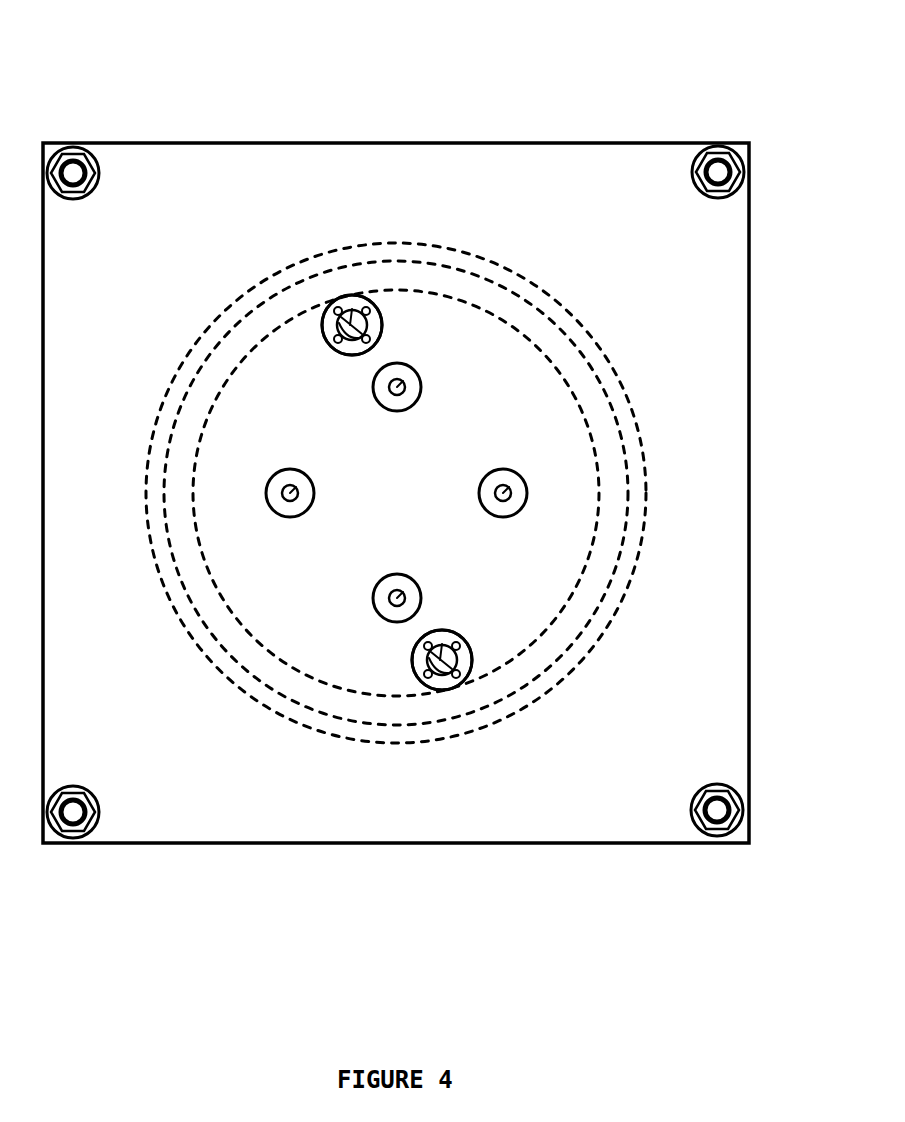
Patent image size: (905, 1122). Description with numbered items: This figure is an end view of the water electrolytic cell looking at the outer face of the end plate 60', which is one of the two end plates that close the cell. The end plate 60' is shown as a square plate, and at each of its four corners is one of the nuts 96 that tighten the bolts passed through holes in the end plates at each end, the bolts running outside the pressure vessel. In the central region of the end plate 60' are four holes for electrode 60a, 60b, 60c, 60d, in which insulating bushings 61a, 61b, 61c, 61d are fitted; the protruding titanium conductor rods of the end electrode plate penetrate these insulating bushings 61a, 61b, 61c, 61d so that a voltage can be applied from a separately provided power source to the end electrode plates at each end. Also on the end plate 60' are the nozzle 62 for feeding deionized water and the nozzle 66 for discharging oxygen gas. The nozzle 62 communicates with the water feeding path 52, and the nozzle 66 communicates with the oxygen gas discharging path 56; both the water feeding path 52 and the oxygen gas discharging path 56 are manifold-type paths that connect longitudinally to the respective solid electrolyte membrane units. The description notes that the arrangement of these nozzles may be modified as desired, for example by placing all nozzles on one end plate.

The end plate 60' is at (396, 426).
The nut 96 is at (733, 830).
The oxygen gas discharging path 56 is at (357, 315).
The nozzle for discharging oxygen gas 66 is at (338, 318).
The water feeding path 52 is at (445, 688).
The nozzle for feeding deionized water 62 is at (430, 688).
The hole for electrode 60a is at (400, 385).
The hole for electrode 60b is at (410, 590).
The hole for electrode 60c is at (300, 480).
The hole for electrode 60d is at (515, 480).
The insulating bushing 61a is at (380, 400).
The insulating bushing 61b is at (375, 590).
The insulating bushing 61c is at (278, 480).
The insulating bushing 61d is at (490, 480).